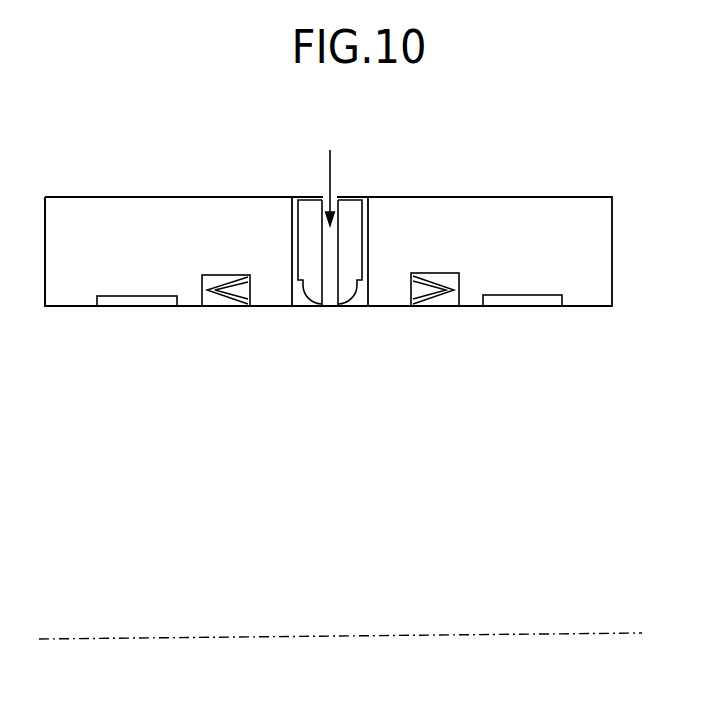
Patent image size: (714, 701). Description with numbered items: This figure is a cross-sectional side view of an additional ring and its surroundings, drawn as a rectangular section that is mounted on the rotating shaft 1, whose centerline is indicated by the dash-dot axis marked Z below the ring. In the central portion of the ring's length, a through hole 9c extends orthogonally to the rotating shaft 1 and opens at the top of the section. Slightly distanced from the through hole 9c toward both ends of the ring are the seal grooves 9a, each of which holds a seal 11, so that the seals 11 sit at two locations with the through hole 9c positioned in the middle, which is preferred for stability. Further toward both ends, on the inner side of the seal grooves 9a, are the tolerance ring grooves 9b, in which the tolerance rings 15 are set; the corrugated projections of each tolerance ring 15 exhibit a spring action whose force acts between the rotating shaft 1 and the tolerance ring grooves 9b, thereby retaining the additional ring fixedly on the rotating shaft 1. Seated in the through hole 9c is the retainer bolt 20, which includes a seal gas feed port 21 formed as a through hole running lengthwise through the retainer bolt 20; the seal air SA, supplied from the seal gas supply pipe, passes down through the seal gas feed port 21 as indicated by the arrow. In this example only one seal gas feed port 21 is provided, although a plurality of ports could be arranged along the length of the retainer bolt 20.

The rotating shaft 1 is at (364, 600).
The seal groove 9a is at (223, 275).
The tolerance ring groove 9b is at (115, 295).
The through hole 9c is at (305, 310).
The seal 11 is at (227, 310).
The tolerance ring 15 is at (138, 310).
The retainer bolt 20 is at (310, 213).
The seal gas feed port 21 is at (332, 247).
The seal air SA is at (339, 162).
The Z axis Z is at (652, 637).